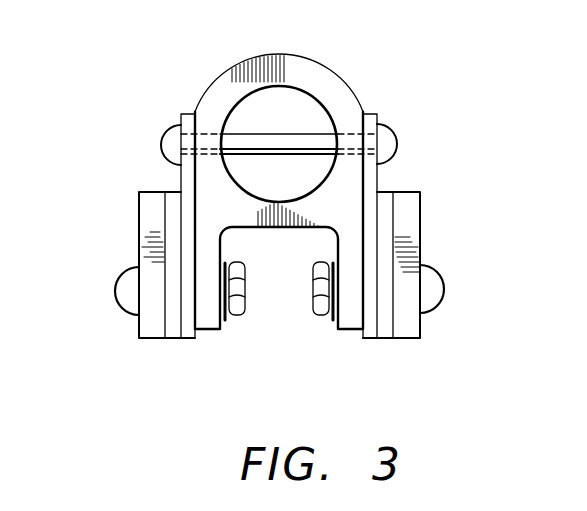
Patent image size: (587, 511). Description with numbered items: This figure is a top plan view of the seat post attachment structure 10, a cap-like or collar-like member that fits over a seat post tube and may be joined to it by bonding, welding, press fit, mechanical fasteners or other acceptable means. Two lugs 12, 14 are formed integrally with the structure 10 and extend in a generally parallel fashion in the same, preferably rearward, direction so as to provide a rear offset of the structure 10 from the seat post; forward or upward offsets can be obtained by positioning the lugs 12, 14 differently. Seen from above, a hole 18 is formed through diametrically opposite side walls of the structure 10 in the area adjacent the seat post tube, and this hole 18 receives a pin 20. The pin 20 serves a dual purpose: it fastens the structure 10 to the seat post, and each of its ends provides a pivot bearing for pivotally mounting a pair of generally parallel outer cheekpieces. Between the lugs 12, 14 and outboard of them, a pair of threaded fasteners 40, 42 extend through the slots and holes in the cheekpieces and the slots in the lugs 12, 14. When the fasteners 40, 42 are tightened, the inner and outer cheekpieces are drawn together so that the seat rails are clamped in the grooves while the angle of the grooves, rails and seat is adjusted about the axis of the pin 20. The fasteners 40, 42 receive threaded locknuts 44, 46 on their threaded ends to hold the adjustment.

The seat post attachment structure 10 is at (312, 56).
The lug 12 is at (207, 331).
The lug 14 is at (357, 331).
The hole 18 is at (208, 137).
The pin 20 is at (160, 143).
The threaded fastener 40 is at (114, 290).
The threaded fastener 42 is at (448, 278).
The threaded locknut 44 is at (238, 318).
The threaded locknut 46 is at (322, 316).